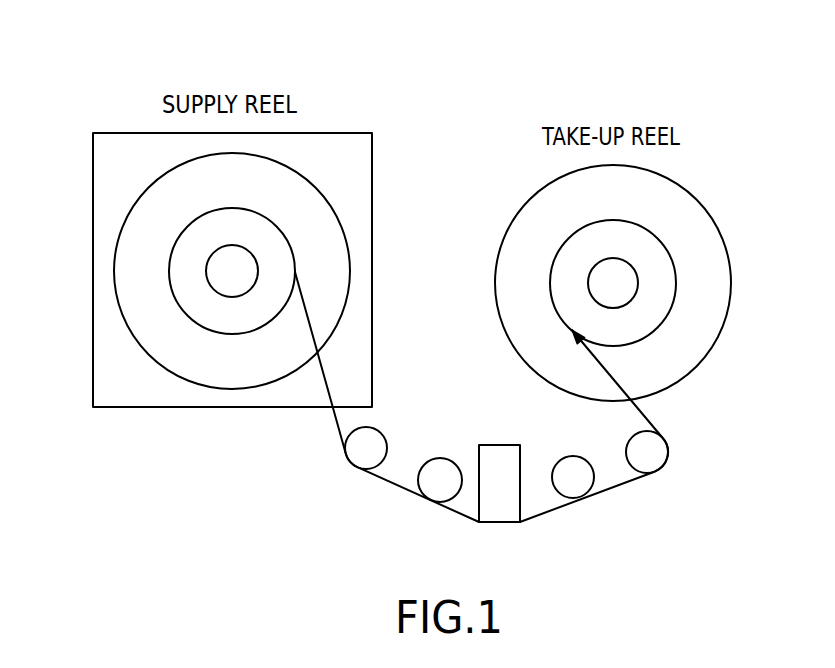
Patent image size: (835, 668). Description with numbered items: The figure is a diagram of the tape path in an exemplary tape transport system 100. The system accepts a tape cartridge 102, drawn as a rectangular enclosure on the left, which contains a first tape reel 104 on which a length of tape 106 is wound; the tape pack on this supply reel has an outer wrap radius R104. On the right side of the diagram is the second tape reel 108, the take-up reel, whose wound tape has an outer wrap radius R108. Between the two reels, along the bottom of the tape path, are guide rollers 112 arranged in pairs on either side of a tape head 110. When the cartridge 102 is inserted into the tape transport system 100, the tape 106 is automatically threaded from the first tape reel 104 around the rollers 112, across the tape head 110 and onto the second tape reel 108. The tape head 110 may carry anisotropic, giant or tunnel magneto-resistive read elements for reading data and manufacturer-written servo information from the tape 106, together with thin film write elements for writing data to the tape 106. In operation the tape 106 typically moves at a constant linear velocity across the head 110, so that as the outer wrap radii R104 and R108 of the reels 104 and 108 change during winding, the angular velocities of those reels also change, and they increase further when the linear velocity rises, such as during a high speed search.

The tape transport system 100 is at (757, 89).
The tape cartridge 102 is at (93, 166).
The first tape reel 104 is at (125, 222).
The radius of the outer wrap of tape on the first tape reel R104 is at (228, 208).
The tape 106 is at (324, 373).
The second tape reel 108 is at (724, 325).
The radius of the outer wrap of tape on the second tape reel R108 is at (613, 220).
The tape head 110 is at (495, 445).
The guide rollers 112 is at (440, 458).